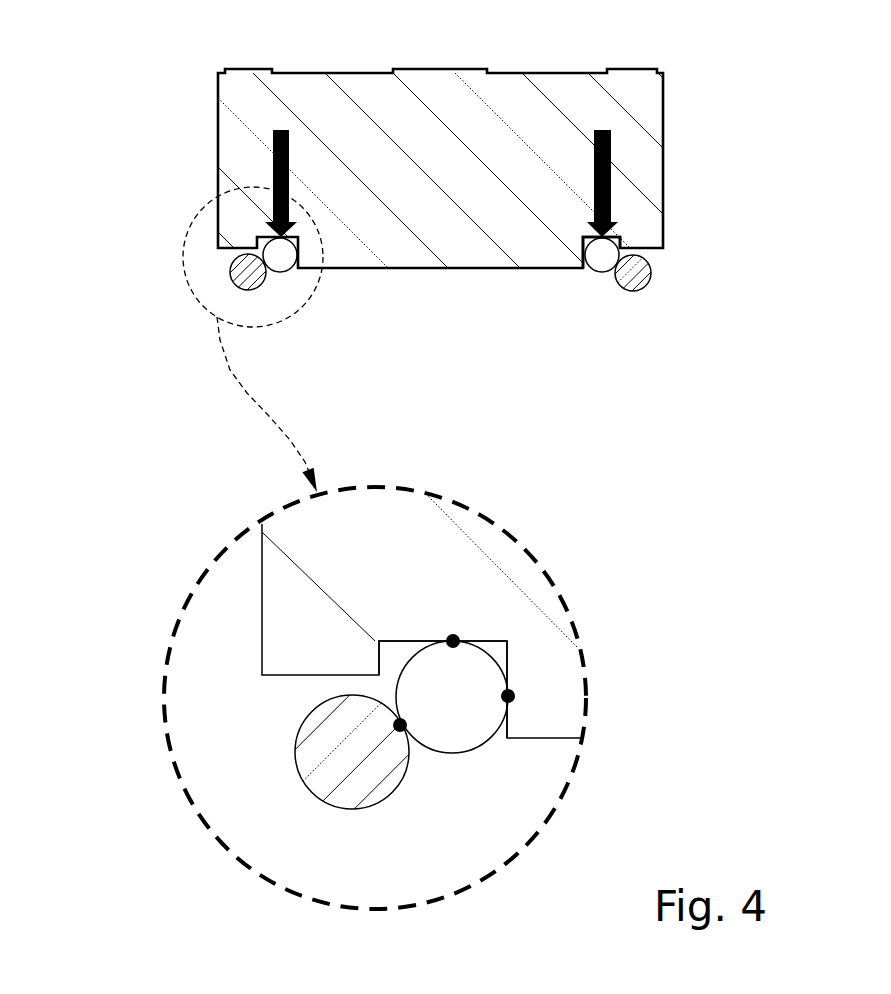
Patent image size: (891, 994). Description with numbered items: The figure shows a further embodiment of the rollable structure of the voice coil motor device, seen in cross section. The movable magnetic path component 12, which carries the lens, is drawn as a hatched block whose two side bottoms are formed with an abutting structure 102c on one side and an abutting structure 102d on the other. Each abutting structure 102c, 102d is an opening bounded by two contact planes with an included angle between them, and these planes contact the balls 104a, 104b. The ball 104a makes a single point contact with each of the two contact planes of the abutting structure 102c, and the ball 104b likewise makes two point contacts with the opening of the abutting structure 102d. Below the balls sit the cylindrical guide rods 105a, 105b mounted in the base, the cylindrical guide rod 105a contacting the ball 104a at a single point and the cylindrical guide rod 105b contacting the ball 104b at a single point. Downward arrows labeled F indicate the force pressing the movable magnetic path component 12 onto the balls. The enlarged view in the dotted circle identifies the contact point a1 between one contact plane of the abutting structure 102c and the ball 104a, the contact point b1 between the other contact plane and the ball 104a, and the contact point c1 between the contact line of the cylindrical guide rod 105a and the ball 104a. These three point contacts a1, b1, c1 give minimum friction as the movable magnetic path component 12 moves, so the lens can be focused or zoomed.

The movable magnetic path component 12 is at (443, 103).
The pressing force F is at (273, 162).
The abutting structure 102c is at (507, 641).
The abutting structure 102d is at (622, 239).
The ball 104a is at (280, 258).
The ball 104b is at (603, 260).
The cylindrical guide rod 105a is at (245, 270).
The cylindrical guide rod 105b is at (631, 274).
The contact point a1 is at (453, 641).
The contact point b1 is at (508, 696).
The contact point c1 is at (400, 725).